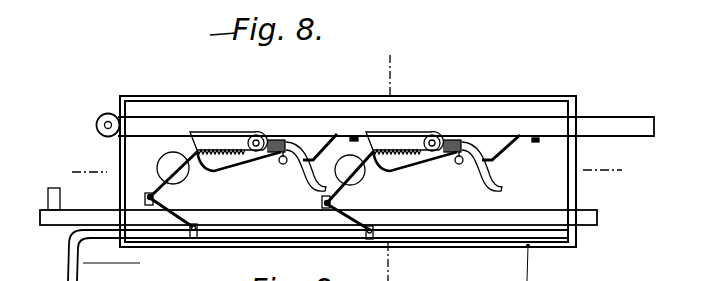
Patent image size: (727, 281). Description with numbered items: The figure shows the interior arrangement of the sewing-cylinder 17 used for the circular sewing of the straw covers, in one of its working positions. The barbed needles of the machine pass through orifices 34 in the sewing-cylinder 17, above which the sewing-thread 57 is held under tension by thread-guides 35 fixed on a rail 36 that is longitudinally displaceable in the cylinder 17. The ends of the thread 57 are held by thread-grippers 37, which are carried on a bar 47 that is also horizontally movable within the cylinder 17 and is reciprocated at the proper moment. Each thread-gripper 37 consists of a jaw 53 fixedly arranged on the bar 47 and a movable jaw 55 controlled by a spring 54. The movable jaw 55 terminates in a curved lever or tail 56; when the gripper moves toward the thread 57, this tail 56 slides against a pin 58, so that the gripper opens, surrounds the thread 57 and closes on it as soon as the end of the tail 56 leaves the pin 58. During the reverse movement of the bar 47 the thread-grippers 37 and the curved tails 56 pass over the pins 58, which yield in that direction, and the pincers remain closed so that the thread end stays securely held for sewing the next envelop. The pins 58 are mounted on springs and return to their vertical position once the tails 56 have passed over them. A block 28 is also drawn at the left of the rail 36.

The sewing-cylinder 17 is at (534, 96).
The bar 47 is at (589, 125).
The rail 36 is at (534, 210).
The stop block 28 is at (53, 188).
The fixed jaw 53 is at (201, 140).
The thread-gripper 37 is at (236, 142).
The spring 54 is at (321, 143).
The orifice 34 is at (177, 175).
The thread-guide 35 is at (149, 195).
The movable jaw 55 is at (226, 169).
The pin 58 is at (278, 166).
The curved lever or tail 56 is at (316, 186).
The thread 57 is at (172, 218).